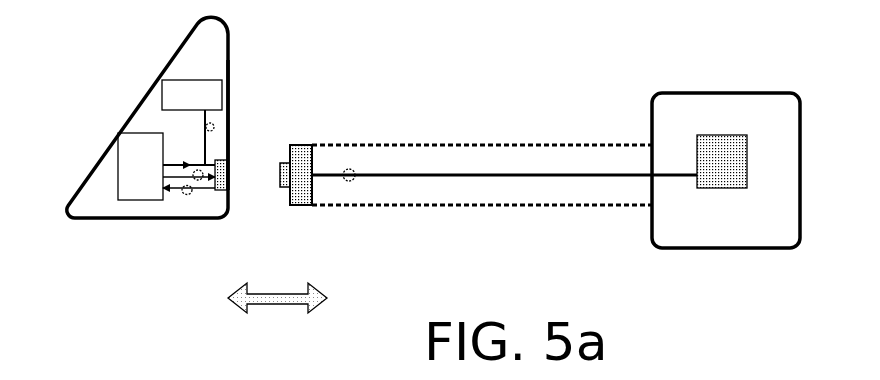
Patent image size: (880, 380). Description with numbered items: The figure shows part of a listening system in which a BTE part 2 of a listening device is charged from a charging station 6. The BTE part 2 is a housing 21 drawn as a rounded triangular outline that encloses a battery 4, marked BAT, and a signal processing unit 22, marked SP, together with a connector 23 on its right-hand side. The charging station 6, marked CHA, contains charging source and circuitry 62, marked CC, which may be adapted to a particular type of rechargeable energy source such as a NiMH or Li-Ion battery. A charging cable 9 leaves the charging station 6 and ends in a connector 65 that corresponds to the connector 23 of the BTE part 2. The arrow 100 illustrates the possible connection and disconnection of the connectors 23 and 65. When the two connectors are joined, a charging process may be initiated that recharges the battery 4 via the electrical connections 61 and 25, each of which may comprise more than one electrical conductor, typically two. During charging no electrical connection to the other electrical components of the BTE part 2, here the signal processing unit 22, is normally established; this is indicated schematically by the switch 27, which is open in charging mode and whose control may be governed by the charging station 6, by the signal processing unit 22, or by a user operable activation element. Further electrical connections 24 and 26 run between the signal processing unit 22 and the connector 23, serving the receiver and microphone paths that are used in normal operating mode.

The BTE part 2 is at (106, 127).
The battery 4 is at (187, 80).
The housing wall 21 is at (230, 68).
The signal processing unit 22 is at (160, 190).
The connector 23 is at (229, 172).
The electrical connection 24 is at (203, 182).
The electrical connection 25 is at (214, 125).
The electrical connection 26 is at (192, 197).
The switch 27 is at (188, 163).
The arrow 100 is at (287, 301).
The connector 65 is at (295, 143).
The electrical connection 61 is at (351, 168).
The charging cable 9 is at (416, 140).
The charging station 6 is at (688, 86).
The charging source and circuitry 62 is at (723, 135).